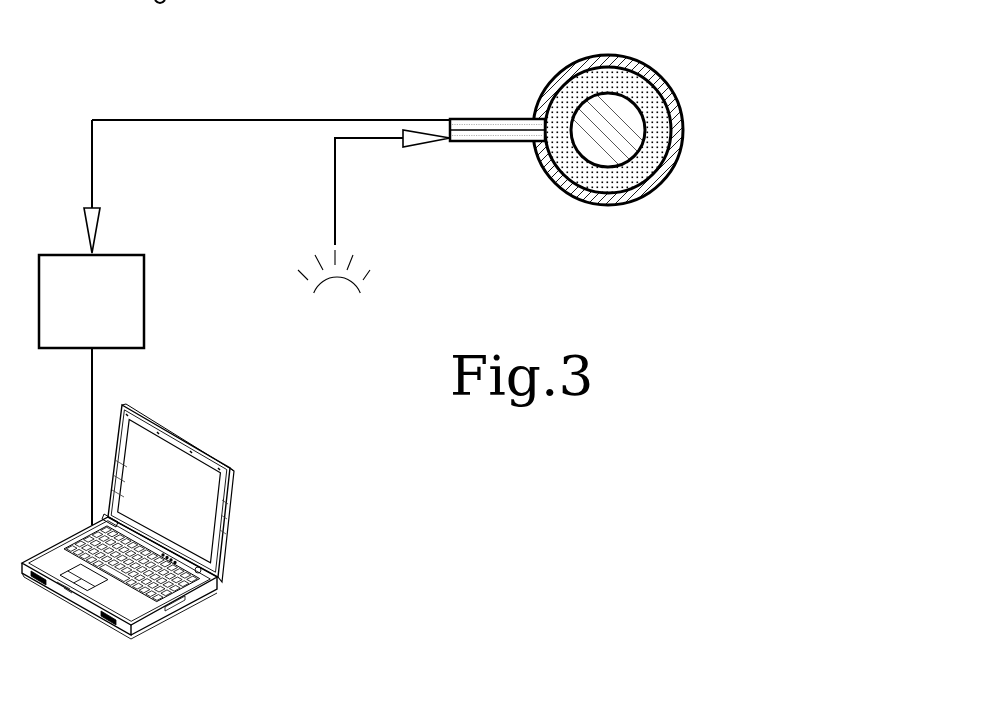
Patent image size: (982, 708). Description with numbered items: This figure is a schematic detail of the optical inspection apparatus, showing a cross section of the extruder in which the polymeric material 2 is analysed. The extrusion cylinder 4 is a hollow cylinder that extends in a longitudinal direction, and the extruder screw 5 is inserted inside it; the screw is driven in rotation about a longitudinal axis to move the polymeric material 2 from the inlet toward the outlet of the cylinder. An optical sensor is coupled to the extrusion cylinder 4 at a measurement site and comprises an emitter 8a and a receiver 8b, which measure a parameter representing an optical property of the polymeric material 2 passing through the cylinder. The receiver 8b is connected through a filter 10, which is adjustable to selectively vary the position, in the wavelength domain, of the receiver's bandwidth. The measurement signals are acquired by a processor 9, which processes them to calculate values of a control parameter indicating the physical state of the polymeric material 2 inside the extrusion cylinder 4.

The polymeric material 2 is at (648, 108).
The extrusion cylinder 4 is at (619, 64).
The extruder screw 5 is at (617, 138).
The emitter 8a is at (340, 290).
The receiver 8b is at (497, 130).
The processor 9 is at (130, 603).
The filter 10 is at (76, 316).